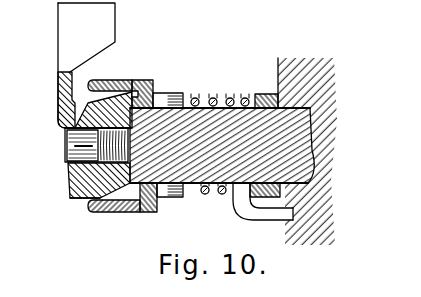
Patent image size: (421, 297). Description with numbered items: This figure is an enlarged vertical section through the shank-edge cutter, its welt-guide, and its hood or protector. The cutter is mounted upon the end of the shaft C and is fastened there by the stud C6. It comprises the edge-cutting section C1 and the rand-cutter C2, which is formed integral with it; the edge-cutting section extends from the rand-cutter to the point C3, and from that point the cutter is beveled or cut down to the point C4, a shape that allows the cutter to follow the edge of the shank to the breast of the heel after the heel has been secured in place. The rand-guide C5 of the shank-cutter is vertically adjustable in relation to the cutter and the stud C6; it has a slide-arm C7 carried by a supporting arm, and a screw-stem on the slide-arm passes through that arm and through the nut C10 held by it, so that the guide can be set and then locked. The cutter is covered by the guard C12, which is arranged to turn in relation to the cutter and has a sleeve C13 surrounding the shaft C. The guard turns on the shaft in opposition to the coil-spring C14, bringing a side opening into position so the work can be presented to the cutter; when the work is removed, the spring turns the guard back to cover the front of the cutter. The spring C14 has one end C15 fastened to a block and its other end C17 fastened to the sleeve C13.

The shaft C is at (312, 108).
The edge-cutting section C1 is at (92, 80).
The rand-cutter C2 is at (78, 199).
The point C3 is at (123, 80).
The point C4 is at (154, 84).
The rand-guide C5 is at (77, 188).
The stud C6 is at (63, 150).
The slide-arm C7 is at (59, 106).
The nut C10 is at (298, 229).
The guard C12 is at (128, 212).
The sleeve C13 is at (158, 200).
The coil-spring C14 is at (195, 98).
The end of spring C15 is at (259, 213).
The end of spring C17 is at (204, 193).